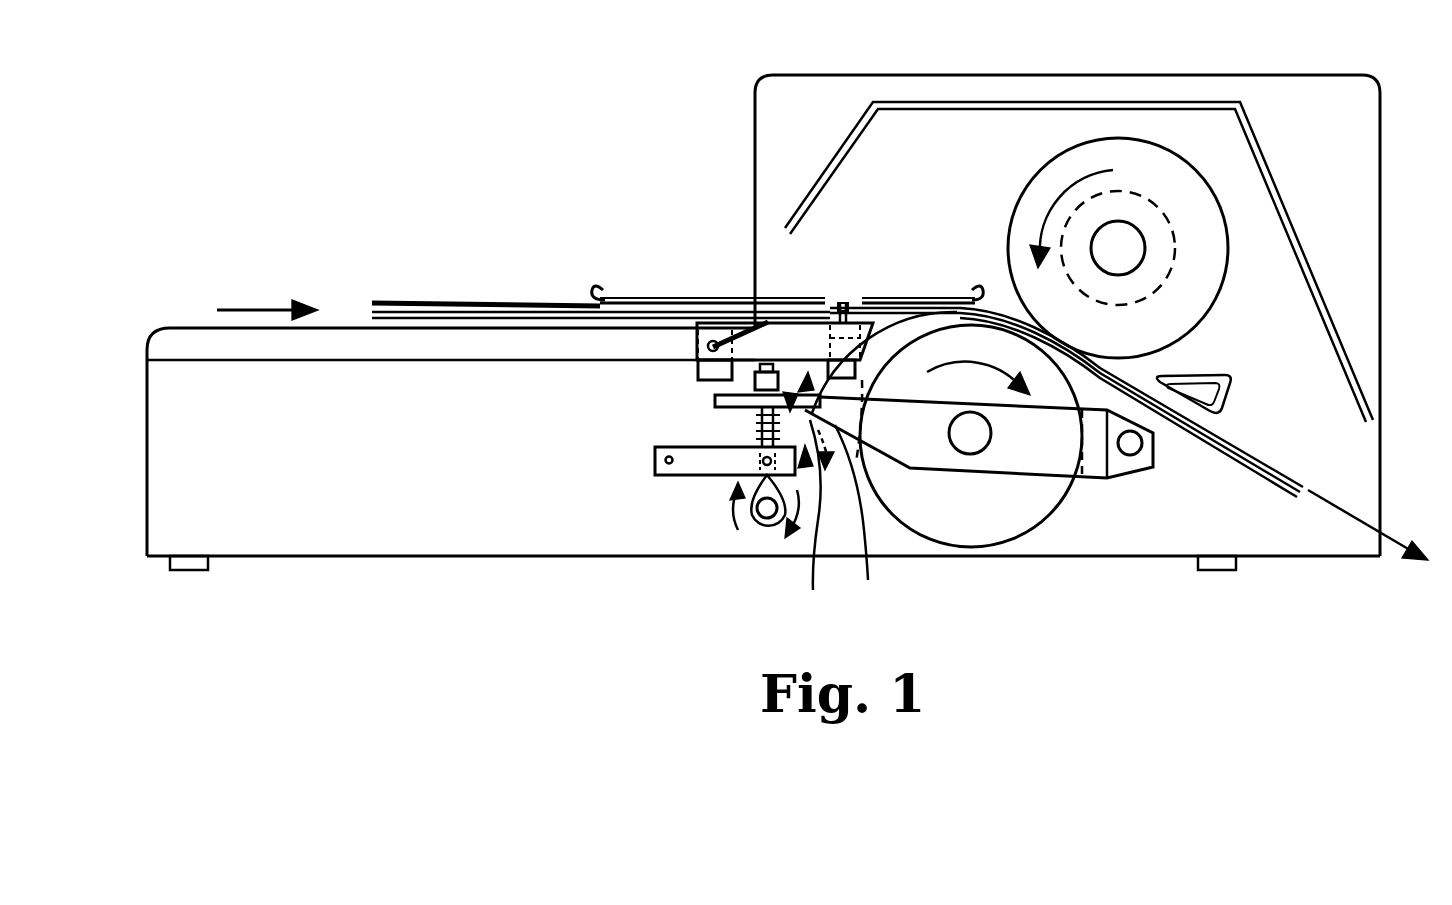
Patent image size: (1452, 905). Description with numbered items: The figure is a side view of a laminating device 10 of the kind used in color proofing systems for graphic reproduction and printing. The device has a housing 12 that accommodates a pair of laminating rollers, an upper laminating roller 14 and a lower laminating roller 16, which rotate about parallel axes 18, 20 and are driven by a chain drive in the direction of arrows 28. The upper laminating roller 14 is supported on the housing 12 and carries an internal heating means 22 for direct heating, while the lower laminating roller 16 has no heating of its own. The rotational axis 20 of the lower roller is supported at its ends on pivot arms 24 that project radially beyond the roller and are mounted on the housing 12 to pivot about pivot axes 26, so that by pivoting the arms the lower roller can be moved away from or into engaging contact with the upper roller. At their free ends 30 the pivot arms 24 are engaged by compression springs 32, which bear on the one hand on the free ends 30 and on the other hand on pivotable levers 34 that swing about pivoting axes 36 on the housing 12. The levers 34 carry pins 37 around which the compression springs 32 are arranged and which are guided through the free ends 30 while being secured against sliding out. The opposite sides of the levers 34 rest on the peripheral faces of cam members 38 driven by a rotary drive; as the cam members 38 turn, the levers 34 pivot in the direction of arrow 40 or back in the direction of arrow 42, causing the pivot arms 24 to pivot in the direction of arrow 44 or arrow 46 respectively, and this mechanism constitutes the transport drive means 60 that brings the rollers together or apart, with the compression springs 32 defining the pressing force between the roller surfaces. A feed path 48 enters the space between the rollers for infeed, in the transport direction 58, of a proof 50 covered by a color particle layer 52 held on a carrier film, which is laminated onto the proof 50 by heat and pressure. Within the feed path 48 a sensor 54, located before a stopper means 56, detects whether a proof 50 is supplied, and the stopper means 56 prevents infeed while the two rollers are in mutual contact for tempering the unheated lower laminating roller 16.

The laminating device 10 is at (718, 128).
The housing 12 is at (1352, 180).
The upper laminating roller 14 is at (1022, 216).
The lower laminating roller 16 is at (965, 343).
The rotational axis of upper laminating roller 18 is at (1123, 252).
The rotational axis of lower laminating roller 20 is at (972, 445).
The heating means 22 is at (1150, 193).
The pivot arm 24 is at (1082, 462).
The pivot axis 26 is at (1130, 447).
The arrows 28 is at (1083, 177).
The free end of pivot arm 30 is at (694, 393).
The compression spring 32 is at (758, 437).
The lever 34 is at (700, 468).
The pivoting axis of lever 36 is at (665, 455).
The pin 37 is at (757, 449).
The cam member 38 is at (766, 520).
The arrow 40 is at (806, 498).
The arrow 42 is at (857, 498).
The arrow 44 is at (870, 330).
The arrow 46 is at (784, 360).
The feed path 48 is at (592, 300).
The proof 50 is at (370, 318).
The color particle layer 52 is at (374, 303).
The sensor 54 is at (740, 322).
The stopper means 56 is at (860, 322).
The transport direction 58 is at (250, 310).
The transport drive means 60 is at (937, 570).